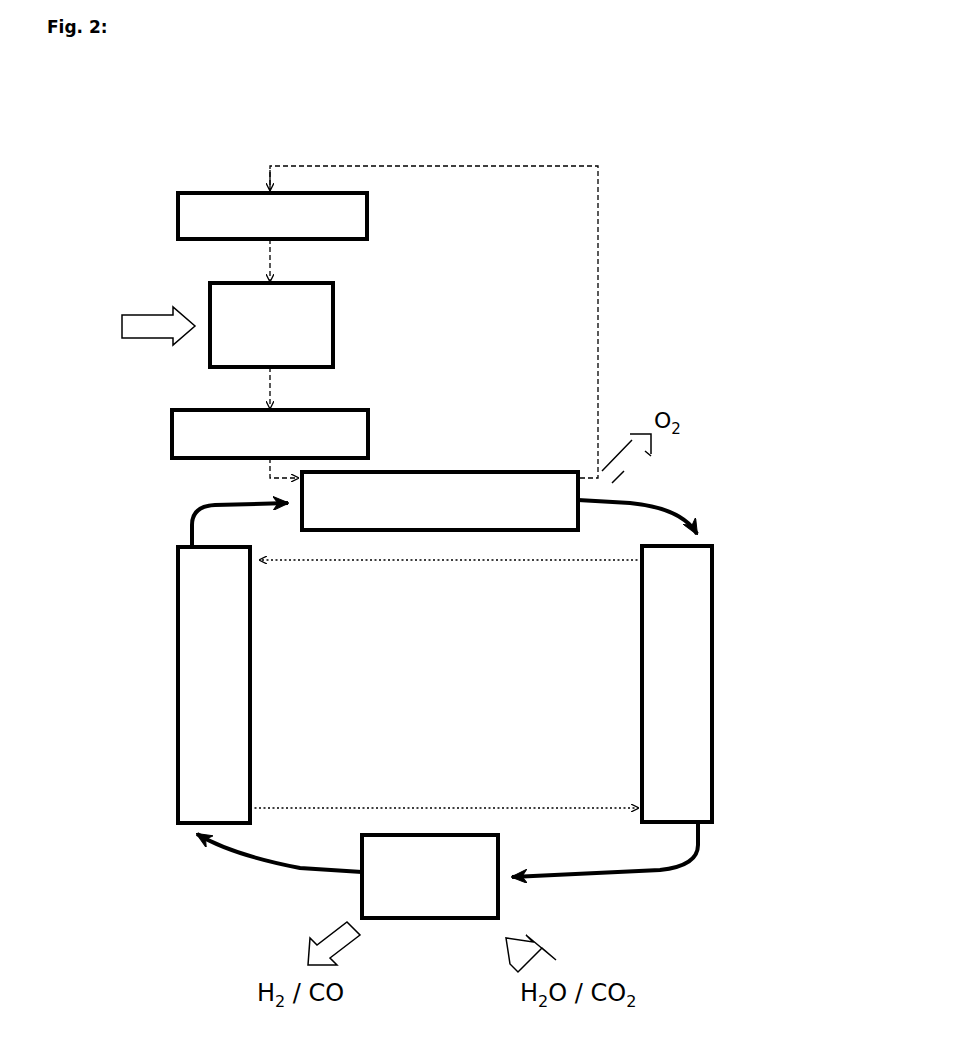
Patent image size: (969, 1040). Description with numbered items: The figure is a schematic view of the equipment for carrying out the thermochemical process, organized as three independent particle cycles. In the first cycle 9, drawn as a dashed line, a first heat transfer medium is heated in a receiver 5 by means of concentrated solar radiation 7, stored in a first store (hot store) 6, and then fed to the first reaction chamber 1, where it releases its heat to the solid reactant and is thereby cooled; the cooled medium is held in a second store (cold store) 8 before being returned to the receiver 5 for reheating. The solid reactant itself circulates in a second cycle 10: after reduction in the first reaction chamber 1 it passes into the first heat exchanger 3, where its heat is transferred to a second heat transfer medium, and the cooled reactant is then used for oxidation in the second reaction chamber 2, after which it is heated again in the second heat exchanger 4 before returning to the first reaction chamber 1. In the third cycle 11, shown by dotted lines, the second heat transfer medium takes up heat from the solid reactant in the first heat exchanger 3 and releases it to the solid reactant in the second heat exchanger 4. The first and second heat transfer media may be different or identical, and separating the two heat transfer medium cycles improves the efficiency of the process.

The first reaction chamber 1 is at (465, 488).
The second reaction chamber 2 is at (452, 908).
The first heat exchanger 3 is at (690, 808).
The second heat exchanger 4 is at (212, 808).
The receiver 5 is at (313, 334).
The first store (hot store) 6 is at (360, 412).
The concentrated solar radiation 7 is at (140, 318).
The second store (cold store) 8 is at (345, 232).
The first cycle (cycle 1) 9 is at (608, 308).
The solid reactant cycle (cycle 2) 10 is at (723, 523).
The second heat transfer medium cycle (cycle 3) 11 is at (429, 577).